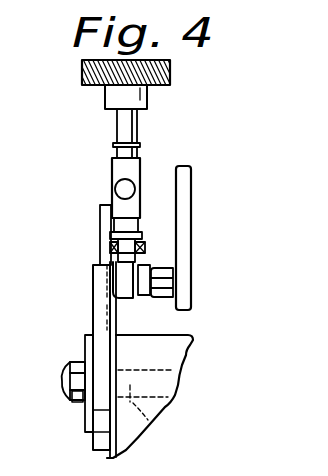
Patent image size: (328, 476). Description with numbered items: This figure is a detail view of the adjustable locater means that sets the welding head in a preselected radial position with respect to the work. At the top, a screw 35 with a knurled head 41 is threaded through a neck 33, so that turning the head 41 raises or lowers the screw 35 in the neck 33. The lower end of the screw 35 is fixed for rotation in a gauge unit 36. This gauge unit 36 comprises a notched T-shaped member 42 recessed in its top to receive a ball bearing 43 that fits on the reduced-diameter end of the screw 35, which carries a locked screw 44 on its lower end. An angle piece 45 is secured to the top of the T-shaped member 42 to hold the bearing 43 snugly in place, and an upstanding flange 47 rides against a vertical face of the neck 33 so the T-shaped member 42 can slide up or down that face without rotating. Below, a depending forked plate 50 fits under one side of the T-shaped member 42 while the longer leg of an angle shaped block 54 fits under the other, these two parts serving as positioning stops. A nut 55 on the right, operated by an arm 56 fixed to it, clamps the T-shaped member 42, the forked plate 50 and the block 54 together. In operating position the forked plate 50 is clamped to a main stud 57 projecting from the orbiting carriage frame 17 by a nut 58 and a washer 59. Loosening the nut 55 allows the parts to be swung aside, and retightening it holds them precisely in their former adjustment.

The carriage frame 17 is at (178, 393).
The neck 33 is at (142, 167).
The screw 35 is at (138, 123).
The gauge unit 36 is at (155, 243).
The knurled head 41 is at (170, 78).
The T-shaped member 42 is at (108, 257).
The ball bearing 43 is at (148, 262).
The locked screw 44 is at (130, 259).
The angle piece 45 is at (110, 238).
The upstanding flange 47 is at (100, 207).
The forked plate 50 is at (100, 313).
The angle shaped block 54 is at (132, 298).
The nut 55 is at (161, 293).
The arm 56 is at (192, 208).
The main stud 57 is at (62, 377).
The nut 58 is at (72, 398).
The washer 59 is at (87, 350).